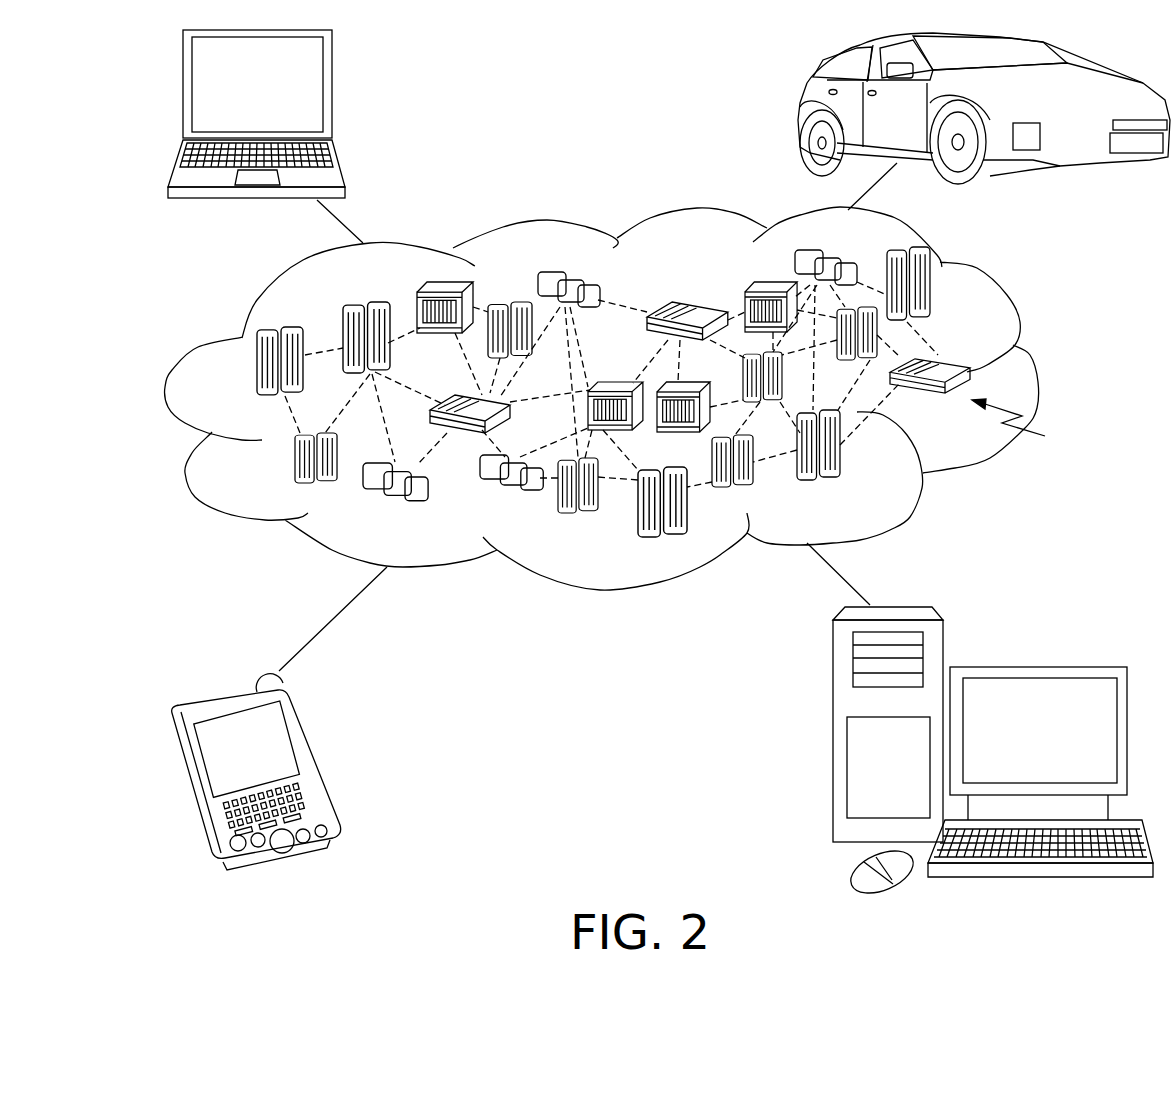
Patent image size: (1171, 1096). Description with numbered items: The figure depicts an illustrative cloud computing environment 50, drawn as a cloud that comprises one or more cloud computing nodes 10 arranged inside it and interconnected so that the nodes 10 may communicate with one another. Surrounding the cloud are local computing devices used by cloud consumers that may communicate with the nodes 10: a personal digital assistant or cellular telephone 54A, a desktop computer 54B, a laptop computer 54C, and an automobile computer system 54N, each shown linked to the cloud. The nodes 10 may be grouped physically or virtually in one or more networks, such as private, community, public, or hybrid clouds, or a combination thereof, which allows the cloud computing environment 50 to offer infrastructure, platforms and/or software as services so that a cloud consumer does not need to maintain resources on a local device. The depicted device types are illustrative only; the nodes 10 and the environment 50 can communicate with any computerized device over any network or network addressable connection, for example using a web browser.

The cloud computing nodes 10 is at (1029, 424).
The cloud computing environment 50 is at (1035, 372).
The personal digital assistant or cellular telephone 54A is at (321, 760).
The desktop computer 54B is at (1035, 666).
The laptop computer 54C is at (333, 89).
The automobile computer system 54N is at (800, 110).